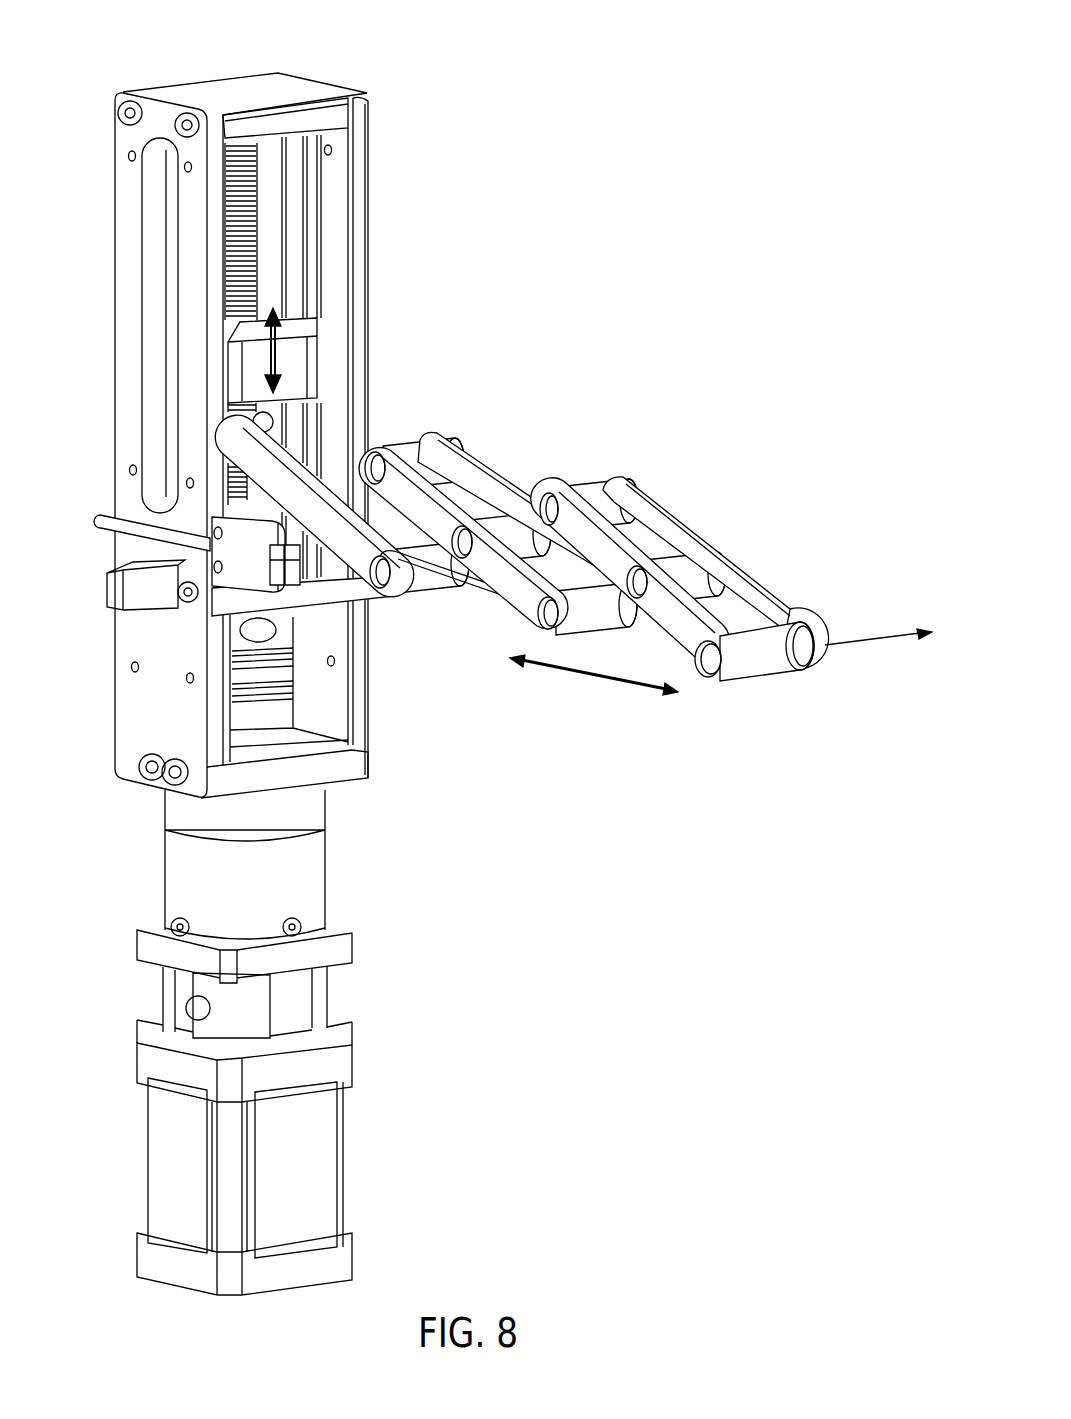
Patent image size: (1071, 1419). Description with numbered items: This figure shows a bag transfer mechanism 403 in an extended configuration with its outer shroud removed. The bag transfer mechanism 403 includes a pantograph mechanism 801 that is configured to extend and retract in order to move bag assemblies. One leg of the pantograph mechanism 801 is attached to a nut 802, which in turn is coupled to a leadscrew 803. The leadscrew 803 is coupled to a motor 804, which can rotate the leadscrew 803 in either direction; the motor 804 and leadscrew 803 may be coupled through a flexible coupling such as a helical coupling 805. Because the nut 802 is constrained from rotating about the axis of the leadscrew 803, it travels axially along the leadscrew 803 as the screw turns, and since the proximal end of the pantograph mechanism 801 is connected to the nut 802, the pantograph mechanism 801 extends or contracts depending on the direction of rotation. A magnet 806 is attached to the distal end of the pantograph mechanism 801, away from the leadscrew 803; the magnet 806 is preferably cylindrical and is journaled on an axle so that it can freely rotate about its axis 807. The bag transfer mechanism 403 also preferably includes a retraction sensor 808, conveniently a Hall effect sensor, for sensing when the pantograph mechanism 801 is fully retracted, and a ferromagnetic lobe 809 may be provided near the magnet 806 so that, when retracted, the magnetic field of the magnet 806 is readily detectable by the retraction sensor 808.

The bag transfer mechanism 403 is at (140, 48).
The pantograph mechanism 801 is at (560, 408).
The nut 802 is at (318, 322).
The leadscrew 803 is at (258, 243).
The motor 804 is at (323, 1173).
The helical coupling 805 is at (273, 667).
The magnet 806 is at (782, 658).
The axis 807 is at (865, 643).
The retraction sensor 808 is at (310, 570).
The ferromagnetic lobe 809 is at (708, 667).